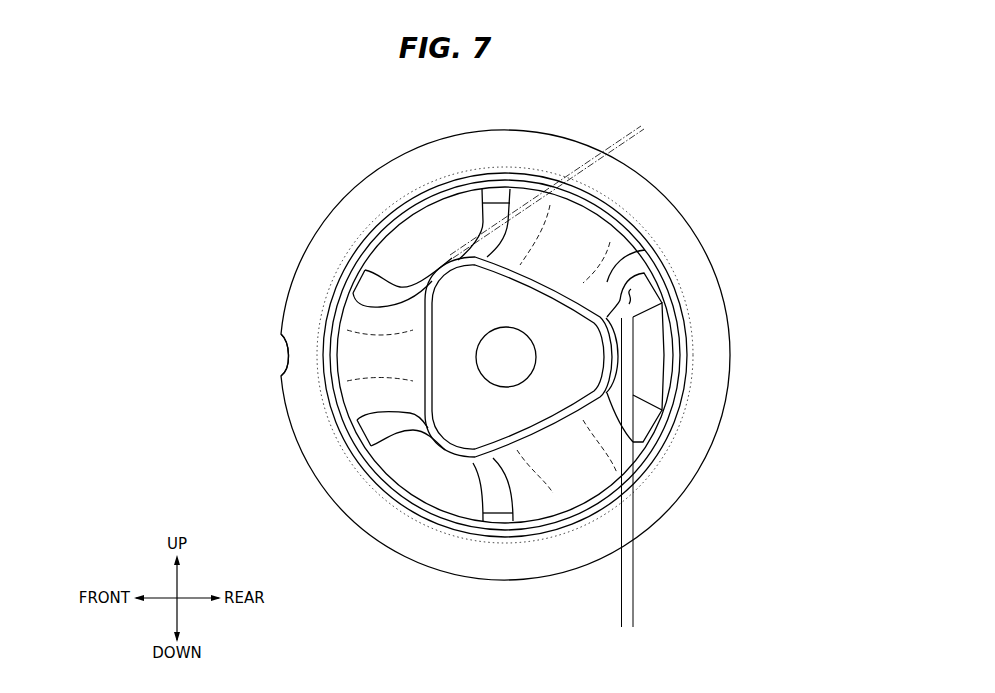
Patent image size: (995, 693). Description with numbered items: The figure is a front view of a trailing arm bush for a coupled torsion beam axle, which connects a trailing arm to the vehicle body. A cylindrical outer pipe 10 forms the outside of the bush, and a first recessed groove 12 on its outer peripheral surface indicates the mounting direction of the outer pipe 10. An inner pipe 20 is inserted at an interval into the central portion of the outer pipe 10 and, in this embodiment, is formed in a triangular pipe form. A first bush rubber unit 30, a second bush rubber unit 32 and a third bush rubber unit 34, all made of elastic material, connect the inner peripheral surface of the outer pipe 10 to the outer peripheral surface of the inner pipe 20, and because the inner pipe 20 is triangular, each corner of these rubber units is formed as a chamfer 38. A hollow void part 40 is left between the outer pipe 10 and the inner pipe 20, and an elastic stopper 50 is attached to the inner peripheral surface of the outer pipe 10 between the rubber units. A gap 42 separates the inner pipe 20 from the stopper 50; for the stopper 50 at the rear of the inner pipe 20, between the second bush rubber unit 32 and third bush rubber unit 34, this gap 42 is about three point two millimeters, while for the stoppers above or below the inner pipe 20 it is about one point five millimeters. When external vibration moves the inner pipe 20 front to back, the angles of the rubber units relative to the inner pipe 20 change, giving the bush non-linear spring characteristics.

The outer pipe 10 is at (350, 228).
The first recessed groove 12 is at (285, 354).
The inner pipe 20 is at (468, 292).
The first bush rubber unit 30 is at (377, 362).
The second bush rubber unit 32 is at (582, 240).
The third bush rubber unit 34 is at (567, 468).
The chamfer 38 is at (660, 259).
The hollow void part 40 is at (657, 292).
The gap 42 is at (570, 608).
The stopper 50 is at (658, 356).